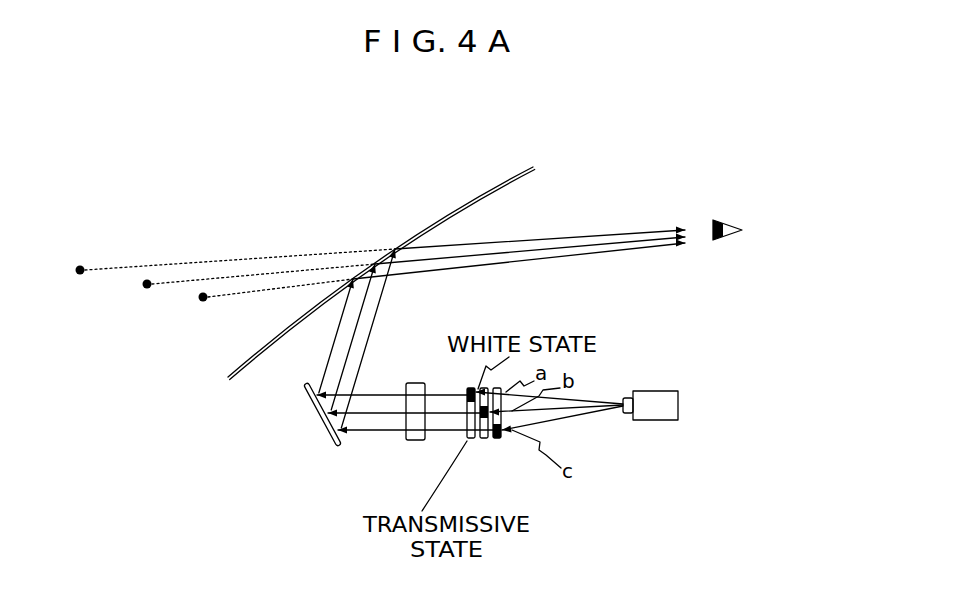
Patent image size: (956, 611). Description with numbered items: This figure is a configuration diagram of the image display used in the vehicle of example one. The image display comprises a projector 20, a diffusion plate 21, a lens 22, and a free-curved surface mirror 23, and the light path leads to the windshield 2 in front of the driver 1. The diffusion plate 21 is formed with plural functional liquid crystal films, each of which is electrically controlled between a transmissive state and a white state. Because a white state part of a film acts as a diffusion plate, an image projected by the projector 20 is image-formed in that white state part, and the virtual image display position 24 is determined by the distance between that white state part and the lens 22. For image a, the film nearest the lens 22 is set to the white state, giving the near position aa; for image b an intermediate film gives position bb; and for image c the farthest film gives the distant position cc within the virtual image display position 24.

The driver 1 is at (745, 212).
The windshield 2 is at (528, 175).
The projector 20 is at (678, 391).
The diffusion plate 21 is at (467, 447).
The lens 22 is at (415, 441).
The free-curved surface mirror 23 is at (318, 440).
The virtual image display position 24 is at (213, 318).